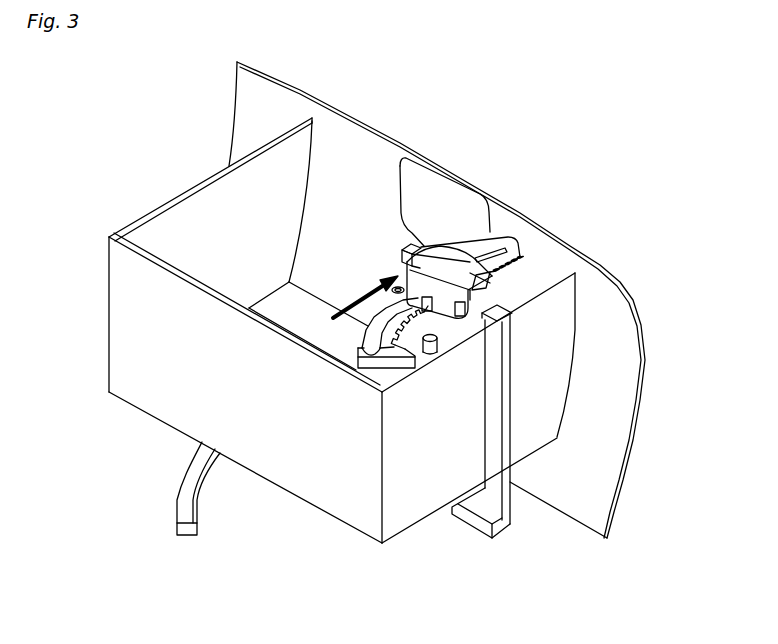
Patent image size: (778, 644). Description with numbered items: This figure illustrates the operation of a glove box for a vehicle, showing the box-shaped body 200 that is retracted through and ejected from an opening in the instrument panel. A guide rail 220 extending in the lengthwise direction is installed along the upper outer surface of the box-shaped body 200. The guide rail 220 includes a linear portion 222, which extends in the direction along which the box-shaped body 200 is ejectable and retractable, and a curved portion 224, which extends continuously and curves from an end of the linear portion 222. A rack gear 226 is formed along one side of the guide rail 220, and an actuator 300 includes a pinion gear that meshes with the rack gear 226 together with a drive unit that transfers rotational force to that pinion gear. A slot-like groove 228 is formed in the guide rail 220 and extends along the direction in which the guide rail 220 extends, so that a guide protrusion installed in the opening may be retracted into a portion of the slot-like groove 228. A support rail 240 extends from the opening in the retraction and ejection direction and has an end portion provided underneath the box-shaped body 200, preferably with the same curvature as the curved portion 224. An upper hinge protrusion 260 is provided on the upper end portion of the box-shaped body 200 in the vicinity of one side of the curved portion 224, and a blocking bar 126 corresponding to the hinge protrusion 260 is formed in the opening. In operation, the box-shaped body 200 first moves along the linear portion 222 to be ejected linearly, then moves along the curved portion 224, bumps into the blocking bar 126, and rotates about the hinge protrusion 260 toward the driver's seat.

The box-shaped body 200 is at (146, 427).
The support rail 240 is at (183, 505).
The curved portion 224 is at (352, 322).
The slot-like groove 228 is at (383, 350).
The upper hinge protrusion 260 is at (438, 345).
The linear portion 222 is at (490, 243).
The rack gear 226 is at (525, 258).
The guide rail 220 is at (522, 241).
The actuator 300 is at (503, 290).
The blocking bar 126 is at (507, 388).